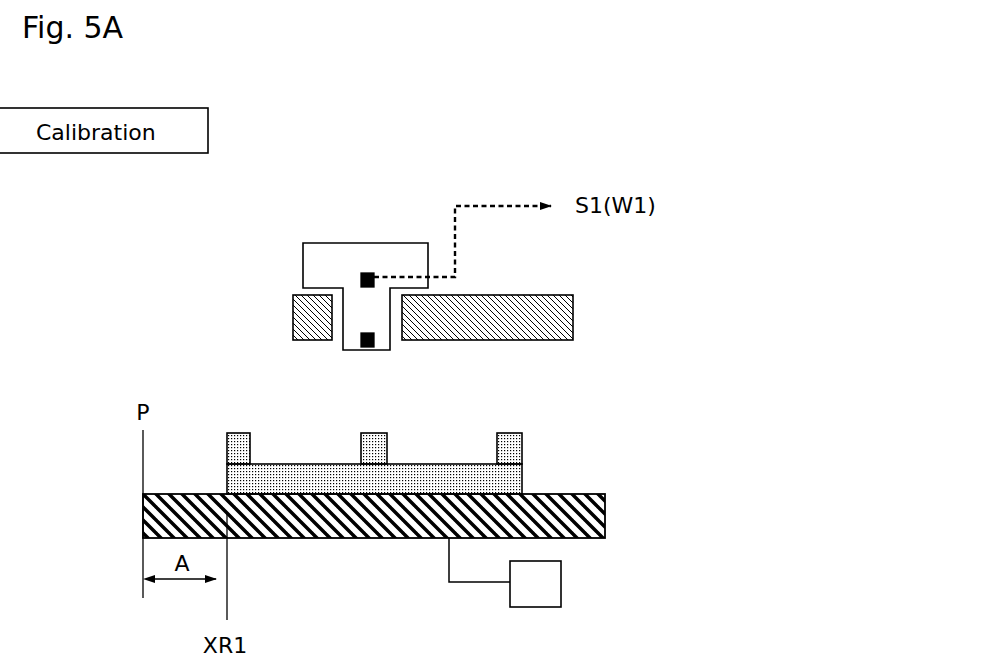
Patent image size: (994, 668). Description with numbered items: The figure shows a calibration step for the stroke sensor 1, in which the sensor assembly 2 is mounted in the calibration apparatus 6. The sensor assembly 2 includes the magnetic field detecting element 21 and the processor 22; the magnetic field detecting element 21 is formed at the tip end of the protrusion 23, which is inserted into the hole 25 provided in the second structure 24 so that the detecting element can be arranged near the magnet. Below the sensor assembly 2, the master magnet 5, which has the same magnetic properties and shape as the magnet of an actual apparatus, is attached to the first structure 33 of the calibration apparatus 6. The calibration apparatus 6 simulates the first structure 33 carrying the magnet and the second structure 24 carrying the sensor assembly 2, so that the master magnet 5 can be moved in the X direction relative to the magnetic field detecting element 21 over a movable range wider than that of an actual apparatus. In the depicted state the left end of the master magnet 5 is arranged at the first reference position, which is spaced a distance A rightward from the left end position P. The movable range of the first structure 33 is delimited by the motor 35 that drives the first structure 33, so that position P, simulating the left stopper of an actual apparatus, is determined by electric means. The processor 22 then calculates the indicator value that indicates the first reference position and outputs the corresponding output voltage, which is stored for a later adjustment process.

The stroke sensor 1 is at (214, 341).
The sensor assembly 2 is at (284, 249).
The master magnet 5 is at (214, 458).
The calibration apparatus 6 is at (590, 401).
The magnetic field detecting element 21 is at (367, 350).
The processor 22 is at (366, 273).
The protrusion 23 is at (347, 322).
The second structure 24 is at (538, 295).
The hole 25 is at (398, 333).
The first structure 33 is at (585, 494).
The motor 35 is at (535, 607).